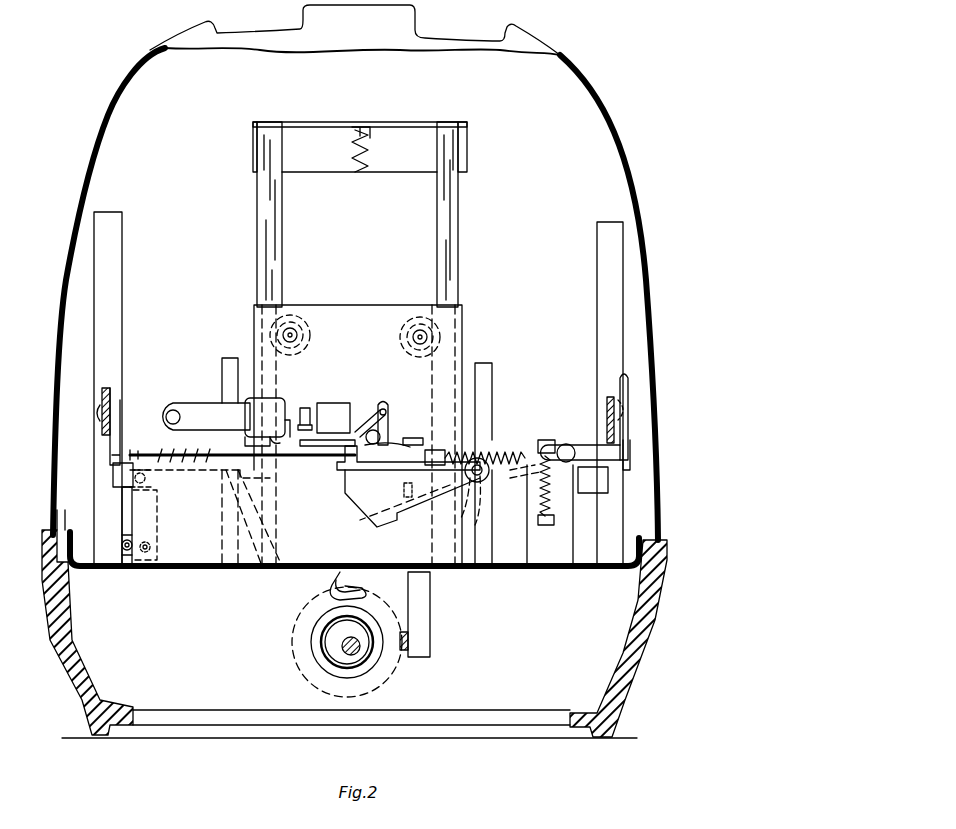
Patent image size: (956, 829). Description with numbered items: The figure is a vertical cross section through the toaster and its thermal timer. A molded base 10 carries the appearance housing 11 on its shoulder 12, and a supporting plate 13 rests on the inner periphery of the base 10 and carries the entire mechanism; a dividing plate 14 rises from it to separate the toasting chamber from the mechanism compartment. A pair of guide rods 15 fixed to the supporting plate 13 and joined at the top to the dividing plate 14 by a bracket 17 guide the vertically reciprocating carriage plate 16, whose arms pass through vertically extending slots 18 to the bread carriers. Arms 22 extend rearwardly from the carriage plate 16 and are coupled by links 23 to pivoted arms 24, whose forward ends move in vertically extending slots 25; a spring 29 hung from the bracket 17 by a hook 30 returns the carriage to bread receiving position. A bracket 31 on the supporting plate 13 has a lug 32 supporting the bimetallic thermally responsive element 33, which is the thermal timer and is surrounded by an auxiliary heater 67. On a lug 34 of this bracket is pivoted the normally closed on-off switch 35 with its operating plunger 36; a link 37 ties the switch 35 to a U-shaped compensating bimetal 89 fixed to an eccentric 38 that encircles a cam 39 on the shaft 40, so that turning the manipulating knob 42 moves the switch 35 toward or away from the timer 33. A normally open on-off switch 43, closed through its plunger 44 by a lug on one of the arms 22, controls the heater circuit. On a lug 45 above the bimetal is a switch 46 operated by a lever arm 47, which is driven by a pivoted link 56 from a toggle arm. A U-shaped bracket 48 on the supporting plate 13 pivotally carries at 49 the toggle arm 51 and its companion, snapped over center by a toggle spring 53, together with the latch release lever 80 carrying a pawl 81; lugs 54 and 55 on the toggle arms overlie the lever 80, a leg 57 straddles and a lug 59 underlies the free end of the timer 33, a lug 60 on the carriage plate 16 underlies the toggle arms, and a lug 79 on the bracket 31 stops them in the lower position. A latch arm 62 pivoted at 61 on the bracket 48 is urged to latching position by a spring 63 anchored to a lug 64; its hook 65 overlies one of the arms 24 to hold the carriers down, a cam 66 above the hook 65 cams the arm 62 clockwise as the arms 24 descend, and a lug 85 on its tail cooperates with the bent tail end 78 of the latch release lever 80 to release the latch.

The base 10 is at (50, 632).
The appearance housing 11 is at (78, 218).
The shoulder 12 is at (62, 540).
The supporting plate 13 is at (122, 573).
The dividing plate 14 is at (188, 253).
The guide rods 15 is at (282, 232).
The carriage plate 16 is at (358, 435).
The bracket 17 is at (318, 122).
The vertically extending slots 18 is at (222, 368).
The arms 22 is at (115, 489).
The links 23 is at (110, 450).
The arms 24 is at (103, 392).
The vertically extending slots 25 is at (122, 305).
The spring 29 is at (350, 152).
The hook 30 is at (372, 138).
The bracket 31 is at (122, 543).
The forwardly extending lug 32 is at (133, 450).
The bimetallic thermally responsive element 33 is at (288, 458).
The lug 34 is at (160, 418).
The on-off switch 35 is at (275, 398).
The operating plunger 36 is at (267, 425).
The link 37 is at (330, 587).
The eccentric 38 is at (368, 668).
The cam 39 is at (347, 641).
The shaft 40 is at (362, 643).
The manipulating knob 42 is at (306, 675).
The on-off switch 43 is at (122, 520).
The plunger 44 is at (144, 492).
The forwardly extending lug 45 is at (324, 418).
The switch 46 is at (323, 403).
The lever arm 47 is at (368, 415).
The U-shaped bracket 48 is at (527, 545).
The pivot 49 is at (475, 469).
The toggle arm 51 is at (372, 471).
The toggle spring 53 is at (490, 464).
The struck out lug 54 is at (424, 438).
The struck out lug 55 is at (440, 437).
The pivoted link 56 is at (390, 412).
The leg 57 is at (346, 444).
The lug 59 is at (345, 472).
The lug 60 is at (404, 490).
The pivot 61 is at (565, 444).
The latch arm 62 is at (600, 455).
The spring 63 is at (551, 483).
The lug 64 is at (556, 520).
The hook 65 is at (607, 398).
The cam 66 is at (620, 382).
The auxiliary heater 67 is at (184, 466).
The tail end 78 is at (518, 490).
The lug 79 is at (376, 522).
The latch release lever 80 is at (391, 432).
The pawl 81 is at (383, 405).
The lug 85 is at (540, 440).
The compensating bimetal 89 is at (360, 589).